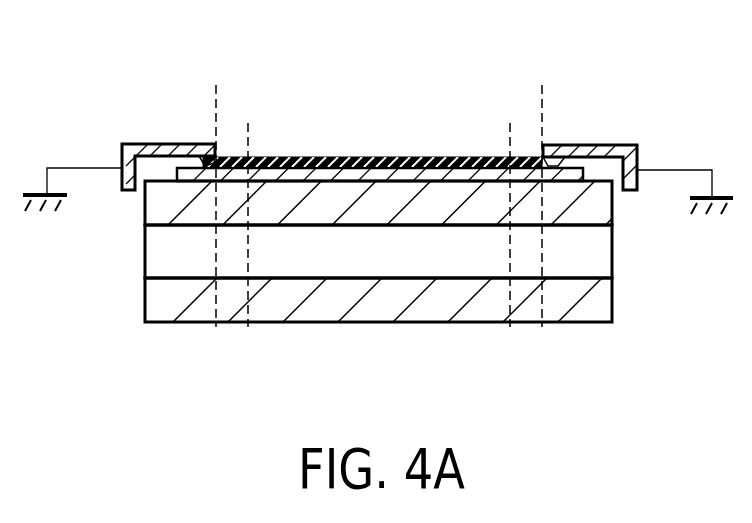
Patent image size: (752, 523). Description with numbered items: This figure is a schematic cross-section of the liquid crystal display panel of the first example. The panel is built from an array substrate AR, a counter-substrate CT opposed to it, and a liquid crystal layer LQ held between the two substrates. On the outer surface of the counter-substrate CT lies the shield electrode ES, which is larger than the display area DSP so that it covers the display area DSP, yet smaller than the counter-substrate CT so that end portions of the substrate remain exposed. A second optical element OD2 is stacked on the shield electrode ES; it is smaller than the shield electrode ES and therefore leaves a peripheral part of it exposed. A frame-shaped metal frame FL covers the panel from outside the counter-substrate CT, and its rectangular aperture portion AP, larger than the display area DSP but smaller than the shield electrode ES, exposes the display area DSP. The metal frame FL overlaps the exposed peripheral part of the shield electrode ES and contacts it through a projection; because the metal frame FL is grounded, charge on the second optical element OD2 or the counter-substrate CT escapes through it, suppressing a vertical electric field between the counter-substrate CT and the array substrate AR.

The metal frame FL is at (158, 144).
The aperture portion AP is at (545, 78).
The second optical element OD2 is at (313, 156).
The shield electrode ES is at (411, 163).
The counter-substrate CT is at (598, 204).
The liquid crystal layer LQ is at (598, 262).
The array substrate AR is at (598, 308).
The display area DSP is at (508, 330).